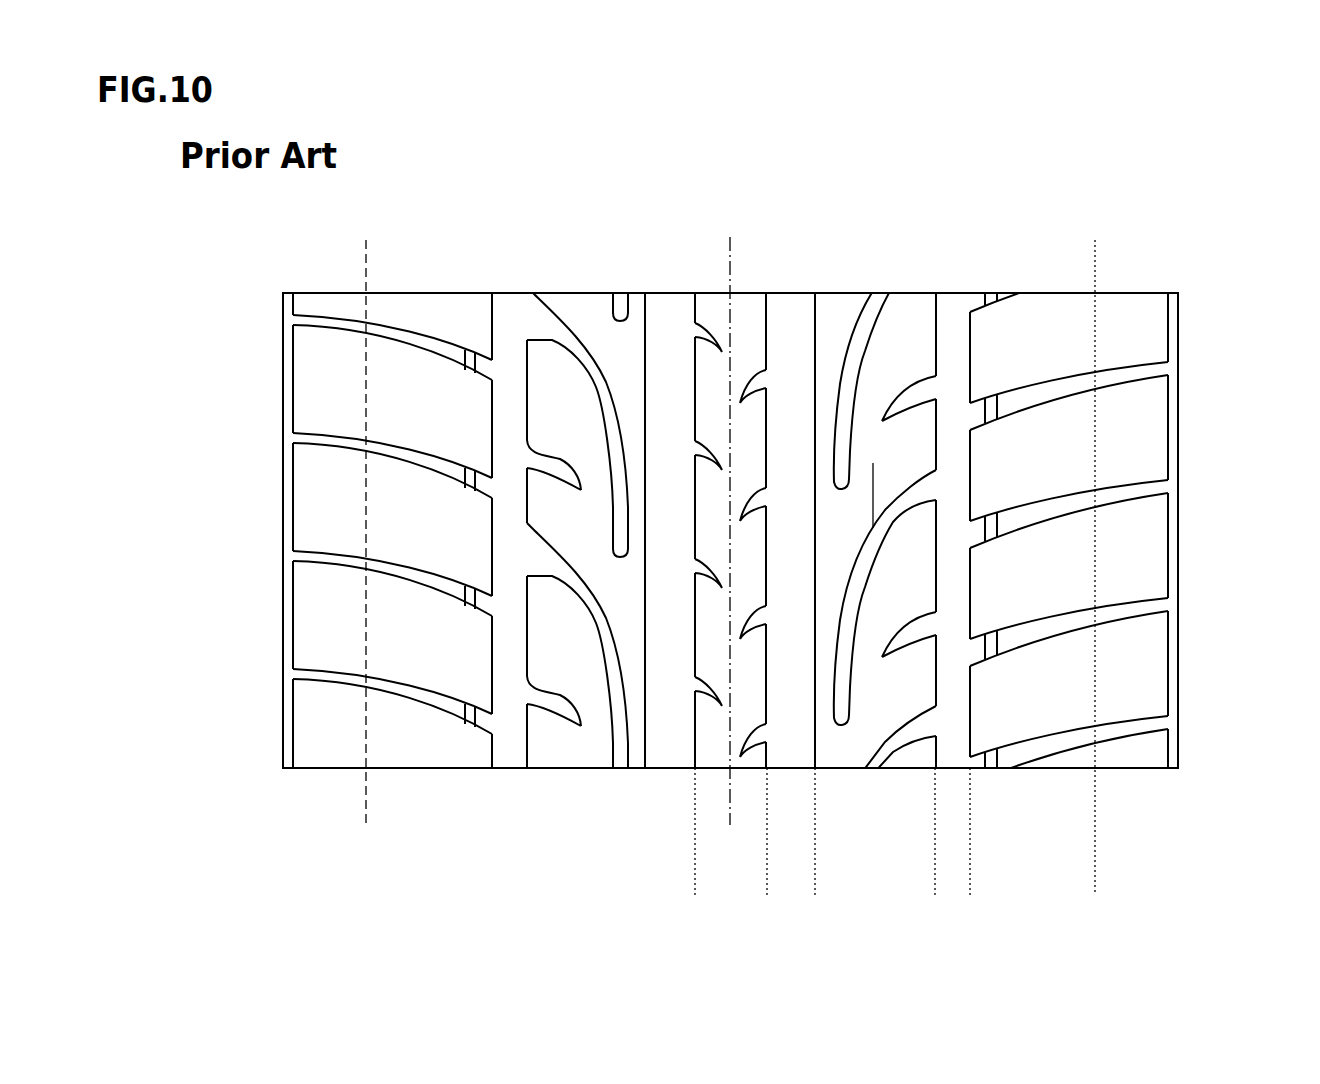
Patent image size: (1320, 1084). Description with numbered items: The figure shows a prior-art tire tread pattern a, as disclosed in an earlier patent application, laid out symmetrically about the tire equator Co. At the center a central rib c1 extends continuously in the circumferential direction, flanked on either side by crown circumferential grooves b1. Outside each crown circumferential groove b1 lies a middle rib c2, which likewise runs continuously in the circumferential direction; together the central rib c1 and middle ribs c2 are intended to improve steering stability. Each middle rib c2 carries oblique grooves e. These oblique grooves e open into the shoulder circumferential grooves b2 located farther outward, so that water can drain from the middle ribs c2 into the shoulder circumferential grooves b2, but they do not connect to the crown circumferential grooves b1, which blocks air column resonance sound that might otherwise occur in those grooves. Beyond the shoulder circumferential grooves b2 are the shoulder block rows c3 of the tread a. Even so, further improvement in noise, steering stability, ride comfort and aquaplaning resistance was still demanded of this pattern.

The tire tread (prior art) a is at (1200, 269).
The crown circumferential groove b1 is at (672, 320).
The shoulder circumferential groove b2 is at (508, 310).
The tire equator (center line) Co is at (727, 518).
The oblique groove e is at (596, 368).
The central rib c1 is at (757, 891).
The middle rib c2 is at (925, 891).
The width of shoulder block row c3 is at (1085, 891).